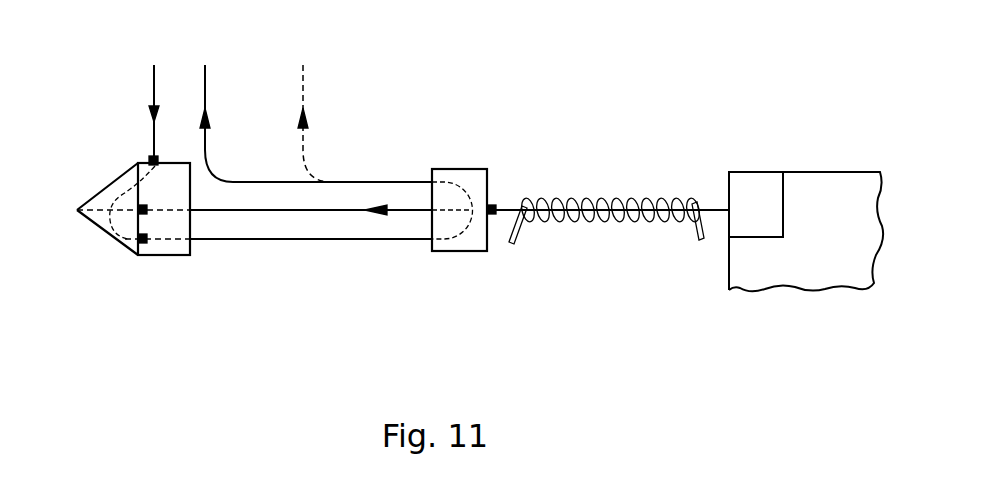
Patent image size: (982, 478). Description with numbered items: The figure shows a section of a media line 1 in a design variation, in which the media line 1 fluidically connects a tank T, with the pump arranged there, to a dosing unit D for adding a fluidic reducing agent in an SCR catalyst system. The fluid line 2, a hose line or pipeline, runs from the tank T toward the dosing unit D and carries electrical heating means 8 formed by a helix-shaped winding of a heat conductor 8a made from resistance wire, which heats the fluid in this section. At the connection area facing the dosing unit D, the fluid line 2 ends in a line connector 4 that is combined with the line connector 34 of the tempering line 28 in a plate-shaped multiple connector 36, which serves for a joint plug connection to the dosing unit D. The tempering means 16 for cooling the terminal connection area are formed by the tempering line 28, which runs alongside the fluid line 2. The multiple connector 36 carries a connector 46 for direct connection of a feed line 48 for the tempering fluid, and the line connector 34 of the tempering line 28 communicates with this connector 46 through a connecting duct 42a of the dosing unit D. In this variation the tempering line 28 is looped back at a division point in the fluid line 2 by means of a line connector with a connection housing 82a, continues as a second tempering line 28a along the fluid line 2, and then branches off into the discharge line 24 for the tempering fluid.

The media line 1 is at (506, 156).
The fluid line 2 is at (310, 210).
The line connector 4 is at (146, 214).
The electrical heating means 8 is at (586, 190).
The heat conductor 8a is at (645, 203).
The tempering means 16 is at (370, 254).
The discharge line 24 is at (205, 87).
The tempering line 28 is at (247, 239).
The second tempering line 28a is at (247, 182).
The line connector 34 is at (143, 243).
The multiple connector 36 is at (175, 156).
The connecting duct 42a is at (113, 226).
The connector 46 is at (150, 157).
The feed line 48 is at (154, 87).
The connection housing 82a is at (468, 254).
The dosing unit D is at (96, 188).
The tank T is at (806, 231).